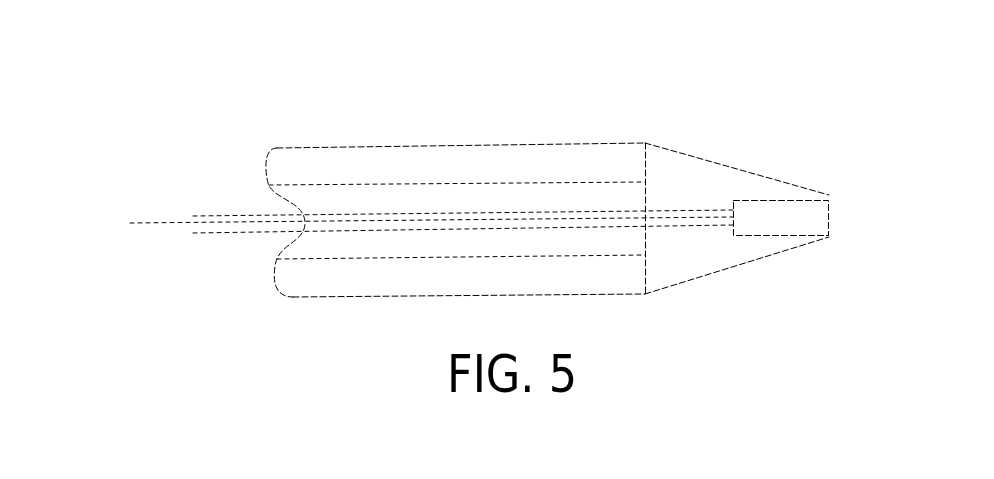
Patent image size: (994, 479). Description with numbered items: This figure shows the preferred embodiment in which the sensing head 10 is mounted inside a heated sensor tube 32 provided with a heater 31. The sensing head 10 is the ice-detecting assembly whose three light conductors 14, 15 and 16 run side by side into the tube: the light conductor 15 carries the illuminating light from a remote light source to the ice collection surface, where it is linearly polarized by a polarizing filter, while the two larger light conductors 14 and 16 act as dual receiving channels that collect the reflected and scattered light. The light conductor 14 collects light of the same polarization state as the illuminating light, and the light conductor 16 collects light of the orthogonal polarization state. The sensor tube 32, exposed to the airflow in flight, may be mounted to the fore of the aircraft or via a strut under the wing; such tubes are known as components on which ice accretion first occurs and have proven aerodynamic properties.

The sensing head 10 is at (798, 202).
The light conductor 14 is at (247, 215).
The light conductor 15 is at (165, 222).
The light conductor 16 is at (258, 233).
The heater 31 is at (318, 162).
The heated sensor tube 32 is at (327, 300).